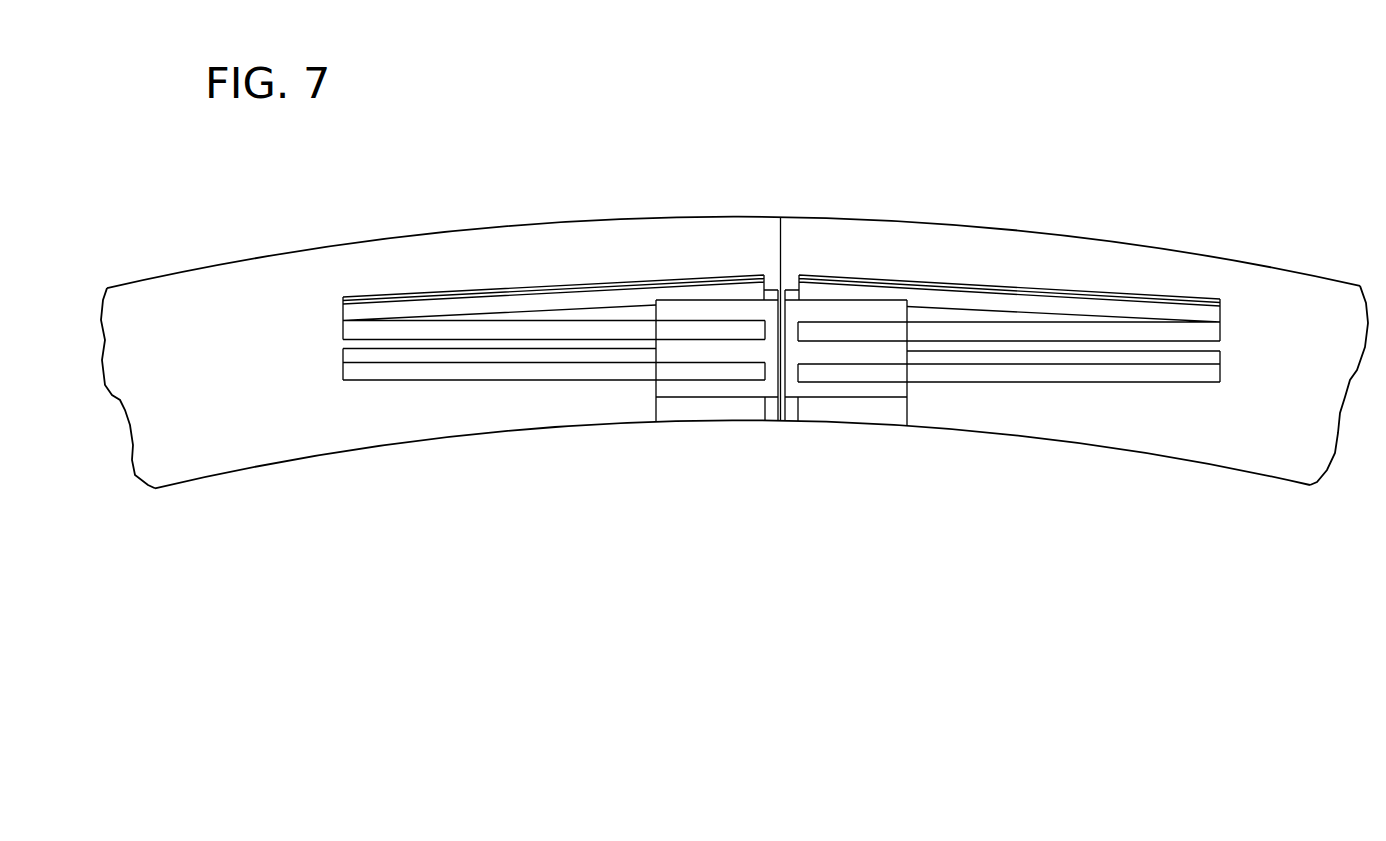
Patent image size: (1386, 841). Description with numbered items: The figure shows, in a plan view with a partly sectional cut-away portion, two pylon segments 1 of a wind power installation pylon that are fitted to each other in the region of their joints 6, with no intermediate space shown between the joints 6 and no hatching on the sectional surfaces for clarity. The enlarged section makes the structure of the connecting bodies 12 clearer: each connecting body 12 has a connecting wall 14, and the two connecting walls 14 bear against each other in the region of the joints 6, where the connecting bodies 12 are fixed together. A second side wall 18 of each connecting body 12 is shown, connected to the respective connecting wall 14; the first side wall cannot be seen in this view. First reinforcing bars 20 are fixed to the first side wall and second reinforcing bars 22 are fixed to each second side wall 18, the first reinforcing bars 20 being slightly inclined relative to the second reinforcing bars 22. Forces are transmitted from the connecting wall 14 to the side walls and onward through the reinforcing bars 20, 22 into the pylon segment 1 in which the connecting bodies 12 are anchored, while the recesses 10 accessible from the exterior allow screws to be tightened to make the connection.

The pylon segment 1 is at (233, 328).
The joint 6 is at (769, 233).
The recess 10 is at (740, 448).
The connecting body 12 is at (688, 344).
The connecting wall 14 is at (770, 412).
The second side wall 18 is at (680, 387).
The first reinforcing bar 20 is at (426, 307).
The second reinforcing bar 22 is at (378, 332).